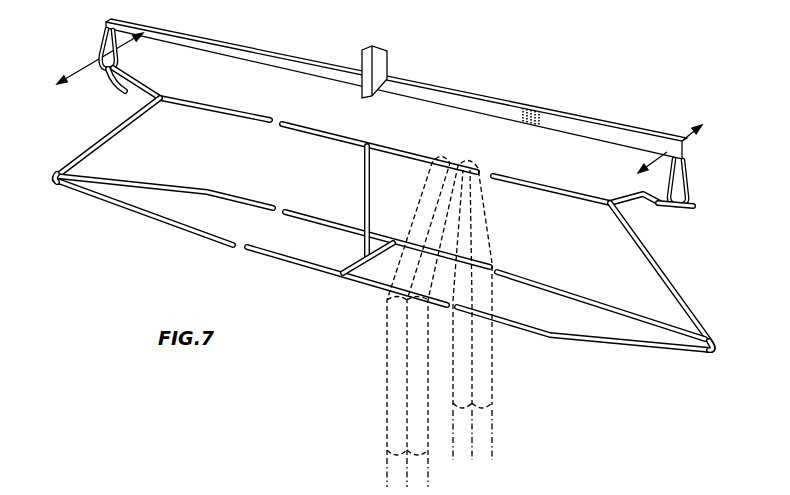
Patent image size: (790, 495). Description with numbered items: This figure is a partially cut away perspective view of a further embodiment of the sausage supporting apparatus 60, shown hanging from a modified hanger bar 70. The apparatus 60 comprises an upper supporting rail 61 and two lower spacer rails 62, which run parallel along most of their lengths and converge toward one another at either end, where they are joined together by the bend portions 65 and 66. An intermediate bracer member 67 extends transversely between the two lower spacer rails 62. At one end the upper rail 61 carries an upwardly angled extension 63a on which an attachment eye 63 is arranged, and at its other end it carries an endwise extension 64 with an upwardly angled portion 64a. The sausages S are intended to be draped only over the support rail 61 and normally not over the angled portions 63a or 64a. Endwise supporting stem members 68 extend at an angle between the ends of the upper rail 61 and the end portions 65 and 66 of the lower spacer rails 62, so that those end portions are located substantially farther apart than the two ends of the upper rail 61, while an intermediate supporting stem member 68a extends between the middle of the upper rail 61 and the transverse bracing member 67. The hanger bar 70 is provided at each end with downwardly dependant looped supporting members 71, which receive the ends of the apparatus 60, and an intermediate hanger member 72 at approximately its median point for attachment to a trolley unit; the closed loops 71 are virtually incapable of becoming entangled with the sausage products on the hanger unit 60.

The sausage supporting apparatus 60 is at (117, 227).
The upper supporting rail 61 is at (309, 114).
The lower spacer rails 62 is at (320, 220).
The attachment eye 63 is at (101, 81).
The upwardly angled extension 63a is at (127, 72).
The endwise extension 64 is at (645, 203).
The upwardly angled portion 64a is at (625, 195).
The bend portion 65 is at (54, 174).
The bend portion 66 is at (712, 356).
The intermediate bracer member 67 is at (352, 267).
The endwise supporting stem members 68 is at (113, 137).
The intermediate supporting stem member 68a is at (365, 178).
The hanger bar 70 is at (523, 108).
The looped supporting members 71 is at (104, 54).
The intermediate hanger member 72 is at (388, 68).
The sausages S is at (397, 362).